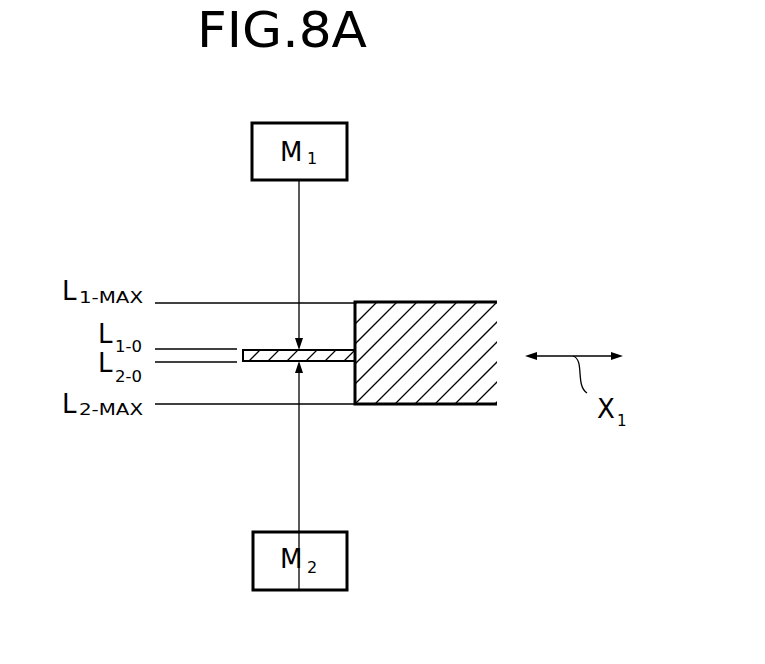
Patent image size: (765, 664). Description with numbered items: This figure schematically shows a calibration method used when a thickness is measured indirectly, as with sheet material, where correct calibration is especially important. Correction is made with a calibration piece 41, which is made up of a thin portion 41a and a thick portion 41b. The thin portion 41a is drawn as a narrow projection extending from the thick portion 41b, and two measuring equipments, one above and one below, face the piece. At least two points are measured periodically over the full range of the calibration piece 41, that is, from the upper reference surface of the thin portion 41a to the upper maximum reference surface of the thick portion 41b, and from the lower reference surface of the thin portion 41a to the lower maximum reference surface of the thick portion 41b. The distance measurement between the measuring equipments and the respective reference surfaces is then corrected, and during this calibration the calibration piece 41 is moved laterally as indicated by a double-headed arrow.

The calibration piece 41 is at (404, 299).
The thin portion 41a is at (258, 350).
The thick portion 41b is at (496, 302).